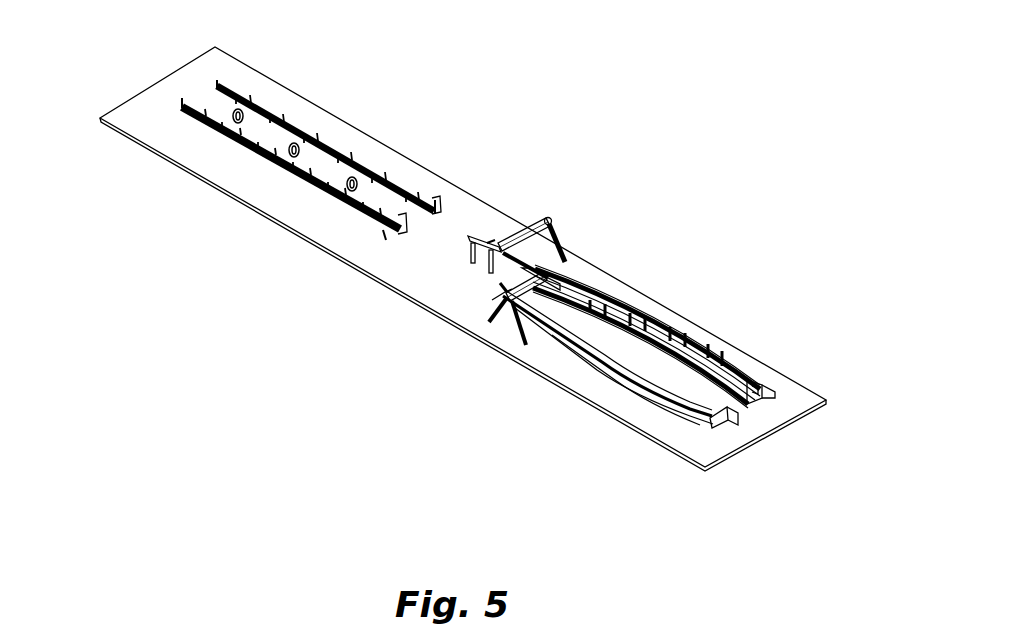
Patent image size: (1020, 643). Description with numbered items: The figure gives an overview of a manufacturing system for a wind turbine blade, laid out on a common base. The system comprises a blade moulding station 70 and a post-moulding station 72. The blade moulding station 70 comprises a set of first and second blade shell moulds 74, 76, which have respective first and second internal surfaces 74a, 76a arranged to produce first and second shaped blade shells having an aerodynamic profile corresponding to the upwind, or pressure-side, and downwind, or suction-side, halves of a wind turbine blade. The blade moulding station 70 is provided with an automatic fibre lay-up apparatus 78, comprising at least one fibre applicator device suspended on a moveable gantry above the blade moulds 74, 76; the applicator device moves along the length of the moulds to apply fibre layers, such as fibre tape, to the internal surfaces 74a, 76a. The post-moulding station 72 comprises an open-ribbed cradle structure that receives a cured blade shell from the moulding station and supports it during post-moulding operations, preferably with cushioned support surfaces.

The blade moulding station 70 is at (756, 285).
The post-moulding station 72 is at (423, 88).
The first blade shell mould 74 is at (623, 415).
The first internal surface 74a is at (715, 405).
The second blade shell mould 76 is at (714, 373).
The second internal surface 76a is at (765, 393).
The automatic fibre lay-up apparatus 78 is at (537, 212).